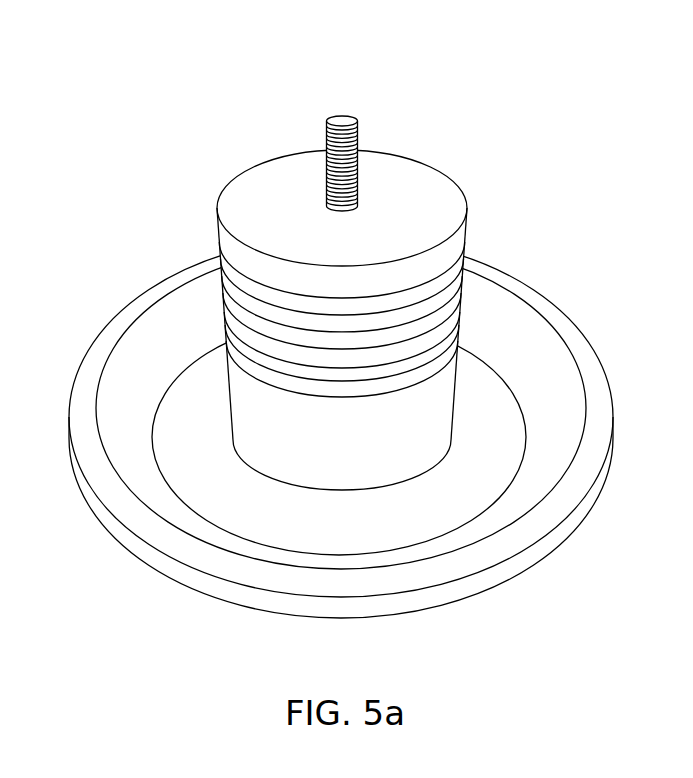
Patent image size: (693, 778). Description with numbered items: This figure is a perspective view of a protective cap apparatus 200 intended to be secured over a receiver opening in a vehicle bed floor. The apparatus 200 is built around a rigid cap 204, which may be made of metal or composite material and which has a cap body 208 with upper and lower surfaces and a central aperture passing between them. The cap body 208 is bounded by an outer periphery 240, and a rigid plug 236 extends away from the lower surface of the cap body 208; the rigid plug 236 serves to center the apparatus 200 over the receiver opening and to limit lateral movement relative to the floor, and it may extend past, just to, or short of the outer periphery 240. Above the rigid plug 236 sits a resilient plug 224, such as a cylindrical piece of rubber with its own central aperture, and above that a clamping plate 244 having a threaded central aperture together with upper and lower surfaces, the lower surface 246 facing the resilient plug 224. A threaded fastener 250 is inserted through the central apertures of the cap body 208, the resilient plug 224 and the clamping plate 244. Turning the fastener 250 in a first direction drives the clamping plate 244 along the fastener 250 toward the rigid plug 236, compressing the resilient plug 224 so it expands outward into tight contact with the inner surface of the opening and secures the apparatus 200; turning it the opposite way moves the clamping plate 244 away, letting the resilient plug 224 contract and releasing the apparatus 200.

The protective cap apparatus 200 is at (367, 316).
The rigid cap 204 is at (502, 578).
The cap body 208 is at (557, 535).
The resilient plug 224 is at (463, 268).
The rigid plug 236 is at (438, 390).
The outer periphery 240 is at (595, 393).
The clamping plate 244 is at (376, 216).
The lower surface 246 is at (446, 206).
The fastener 250 is at (355, 107).